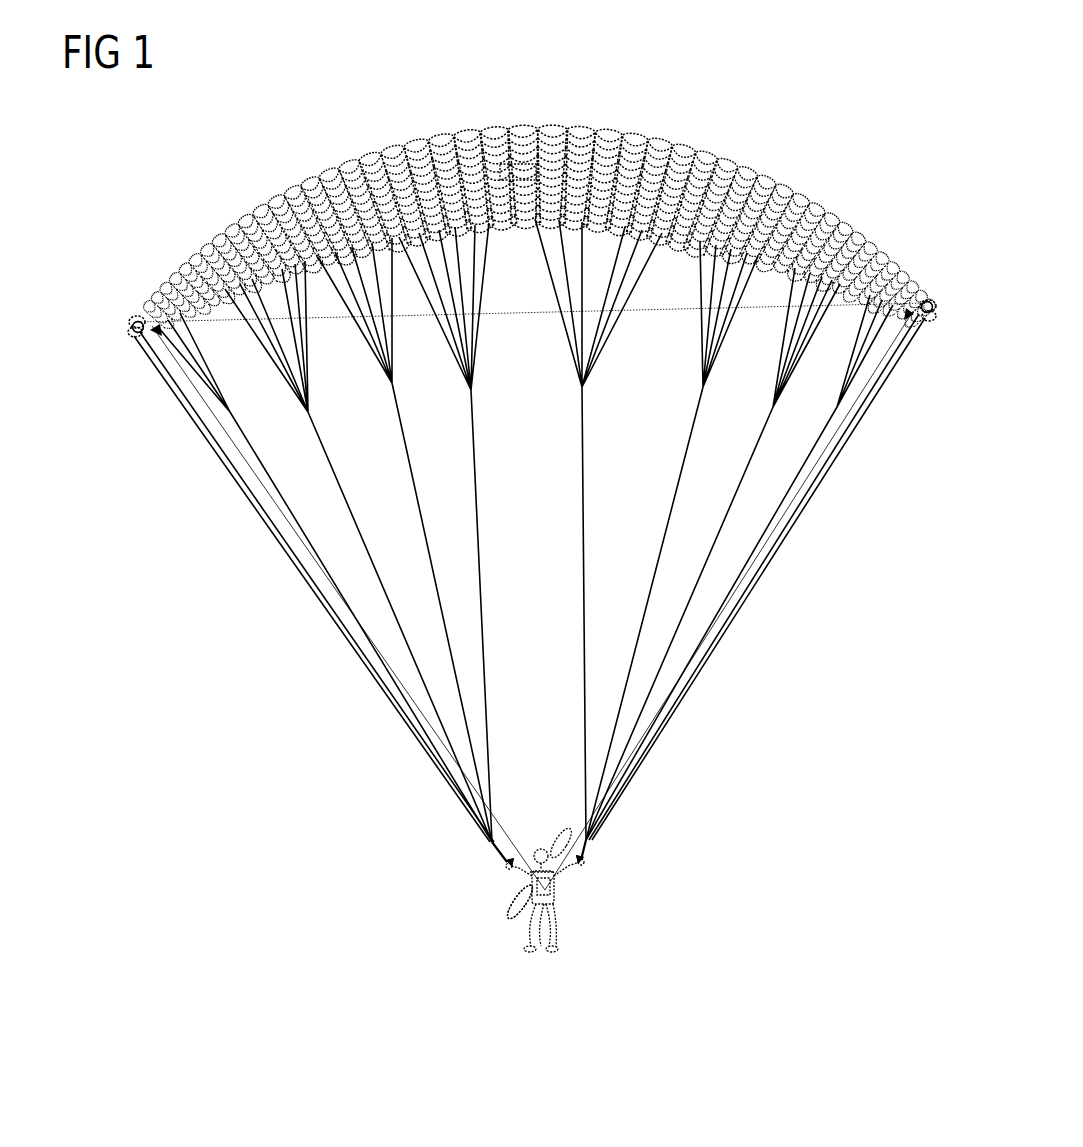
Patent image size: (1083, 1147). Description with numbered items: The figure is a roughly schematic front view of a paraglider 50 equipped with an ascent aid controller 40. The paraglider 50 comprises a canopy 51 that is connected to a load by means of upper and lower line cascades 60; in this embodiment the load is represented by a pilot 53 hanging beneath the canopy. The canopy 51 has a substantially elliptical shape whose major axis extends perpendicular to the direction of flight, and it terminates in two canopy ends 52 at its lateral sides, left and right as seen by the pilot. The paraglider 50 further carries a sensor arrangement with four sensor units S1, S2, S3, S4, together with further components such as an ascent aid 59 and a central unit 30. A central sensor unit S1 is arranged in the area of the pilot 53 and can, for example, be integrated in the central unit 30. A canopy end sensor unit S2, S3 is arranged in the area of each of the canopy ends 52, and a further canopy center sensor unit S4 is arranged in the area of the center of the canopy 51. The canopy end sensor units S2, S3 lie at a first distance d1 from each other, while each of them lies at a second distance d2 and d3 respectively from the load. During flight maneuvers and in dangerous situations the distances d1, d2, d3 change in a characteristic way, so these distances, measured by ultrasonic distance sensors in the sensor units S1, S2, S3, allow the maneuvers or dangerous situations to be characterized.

The paraglider 50 is at (533, 208).
The canopy 51 is at (712, 192).
The canopy ends 52 is at (133, 291).
The load / pilot 53 is at (530, 912).
The ascent aid 59 is at (517, 893).
The upper and lower line cascades 60 is at (645, 605).
The central sensor unit S1 is at (609, 888).
The canopy end sensor unit S2 is at (132, 327).
The canopy end sensor unit S3 is at (933, 306).
The canopy center sensor unit S4 is at (515, 164).
The central unit 30 is at (609, 888).
The ascent aid controller 40 is at (556, 893).
The first distance d1 is at (518, 318).
The second distance d2 is at (270, 498).
The second distance d3 is at (822, 485).